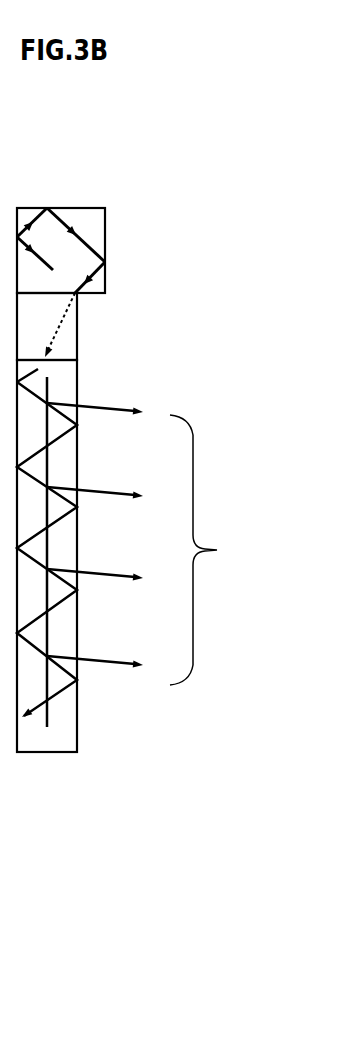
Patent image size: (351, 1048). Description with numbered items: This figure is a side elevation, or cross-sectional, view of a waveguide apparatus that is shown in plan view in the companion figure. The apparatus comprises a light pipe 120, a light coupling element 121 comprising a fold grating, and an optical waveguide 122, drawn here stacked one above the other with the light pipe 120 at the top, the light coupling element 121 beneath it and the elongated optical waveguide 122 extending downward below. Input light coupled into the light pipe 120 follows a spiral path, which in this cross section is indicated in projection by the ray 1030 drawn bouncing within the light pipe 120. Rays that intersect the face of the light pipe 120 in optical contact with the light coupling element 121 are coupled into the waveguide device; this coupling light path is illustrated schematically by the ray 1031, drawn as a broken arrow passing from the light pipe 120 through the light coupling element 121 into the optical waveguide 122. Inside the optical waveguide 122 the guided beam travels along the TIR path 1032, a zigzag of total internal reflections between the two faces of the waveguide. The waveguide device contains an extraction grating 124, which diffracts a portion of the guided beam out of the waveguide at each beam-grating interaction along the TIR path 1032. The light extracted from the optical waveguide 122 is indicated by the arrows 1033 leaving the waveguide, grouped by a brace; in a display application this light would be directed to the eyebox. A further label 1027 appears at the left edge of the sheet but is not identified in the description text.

The light source 1027 is at (4, 175).
The light pipe 120 is at (104, 208).
The spiral path ray 1030 is at (105, 237).
The coupling light path ray 1031 is at (58, 333).
The light coupling element 121 is at (77, 351).
The optical waveguide 122 is at (78, 746).
The TIR path 1032 is at (77, 403).
The extraction grating 124 is at (50, 478).
The extracted light 1033 is at (171, 544).